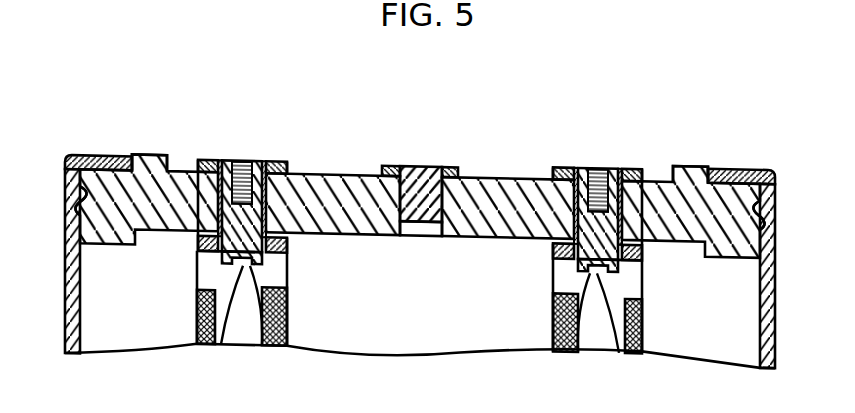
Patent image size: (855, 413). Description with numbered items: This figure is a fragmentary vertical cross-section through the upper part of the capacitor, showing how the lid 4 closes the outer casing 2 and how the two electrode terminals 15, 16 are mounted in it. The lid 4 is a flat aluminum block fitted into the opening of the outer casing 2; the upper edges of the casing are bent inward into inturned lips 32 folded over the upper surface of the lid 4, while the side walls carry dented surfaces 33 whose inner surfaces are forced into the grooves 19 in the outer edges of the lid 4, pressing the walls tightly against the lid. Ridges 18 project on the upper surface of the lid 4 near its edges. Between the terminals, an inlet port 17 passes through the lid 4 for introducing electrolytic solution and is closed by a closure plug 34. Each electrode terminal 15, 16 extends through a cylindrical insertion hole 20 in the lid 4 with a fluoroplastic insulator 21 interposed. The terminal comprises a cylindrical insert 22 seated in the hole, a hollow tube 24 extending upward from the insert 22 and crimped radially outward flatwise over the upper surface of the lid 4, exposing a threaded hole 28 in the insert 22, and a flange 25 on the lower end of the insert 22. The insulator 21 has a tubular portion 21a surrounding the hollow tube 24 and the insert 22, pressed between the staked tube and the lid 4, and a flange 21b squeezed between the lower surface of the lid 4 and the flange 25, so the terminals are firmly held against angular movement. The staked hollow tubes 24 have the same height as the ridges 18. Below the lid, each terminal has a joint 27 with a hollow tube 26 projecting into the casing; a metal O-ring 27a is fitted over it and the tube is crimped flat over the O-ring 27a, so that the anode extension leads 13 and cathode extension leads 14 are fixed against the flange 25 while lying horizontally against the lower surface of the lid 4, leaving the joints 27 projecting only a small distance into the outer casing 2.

The outer casing 2 is at (62, 290).
The lid 4 is at (110, 180).
The anode extension leads 13 is at (240, 312).
The cathode extension leads 14 is at (547, 257).
The electrode terminal 15 is at (240, 150).
The electrode terminal 16 is at (594, 152).
The inlet port 17 is at (418, 238).
The ridges 18 is at (134, 150).
The grooves 19 is at (80, 203).
The insertion holes 20 is at (292, 190).
The insulators 21 is at (296, 244).
The tubular portion 21a is at (216, 198).
The flange 21b is at (278, 207).
The insert 22 is at (210, 242).
The hollow tube 24 is at (274, 160).
The flange 25 is at (196, 245).
The hollow tube 26 is at (197, 305).
The joint 27 is at (266, 348).
The O-ring 27a is at (290, 285).
The threaded hole 28 is at (246, 160).
The inturned lips 32 is at (72, 152).
The dented surfaces 33 is at (72, 197).
The closure plug 34 is at (422, 162).